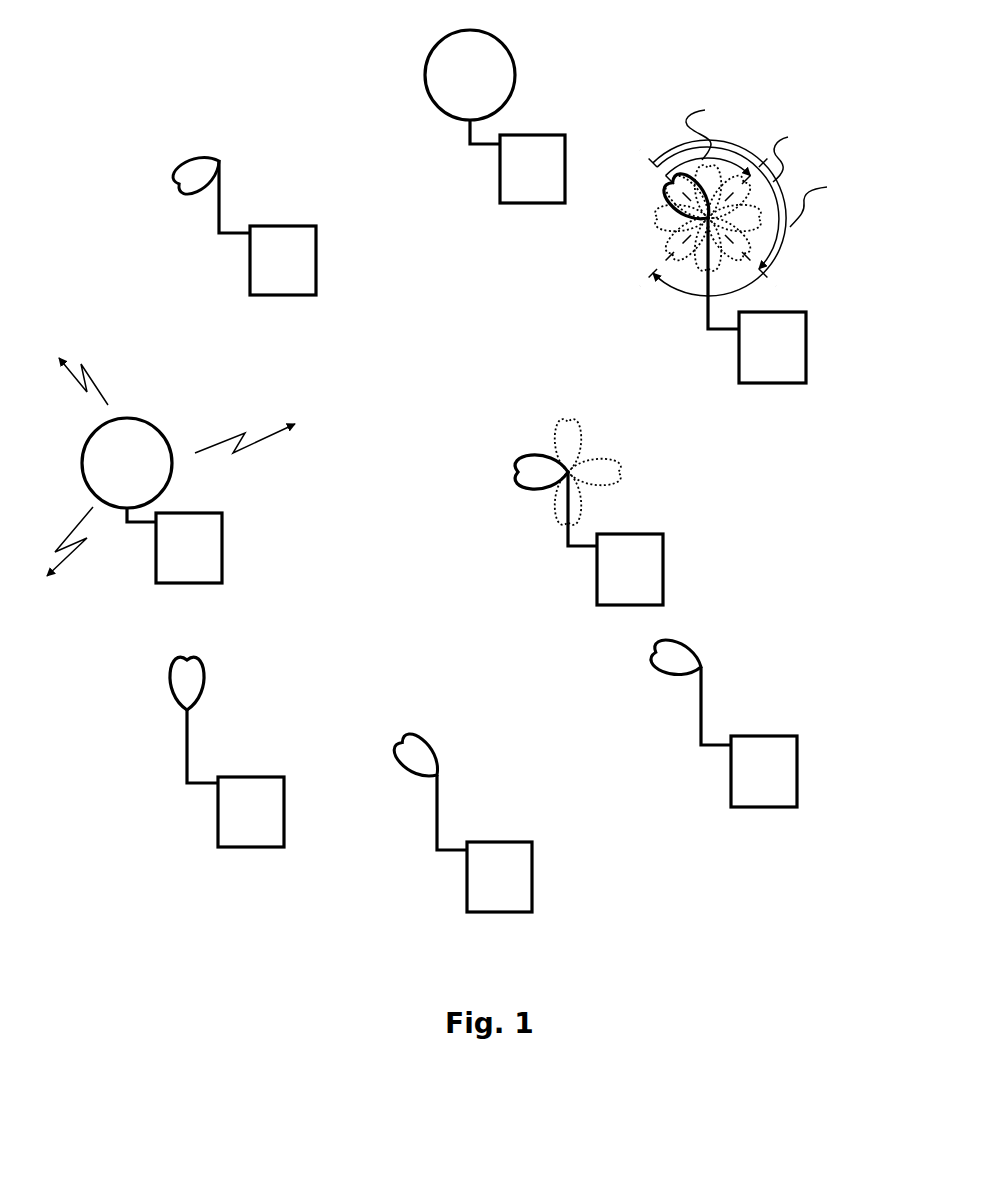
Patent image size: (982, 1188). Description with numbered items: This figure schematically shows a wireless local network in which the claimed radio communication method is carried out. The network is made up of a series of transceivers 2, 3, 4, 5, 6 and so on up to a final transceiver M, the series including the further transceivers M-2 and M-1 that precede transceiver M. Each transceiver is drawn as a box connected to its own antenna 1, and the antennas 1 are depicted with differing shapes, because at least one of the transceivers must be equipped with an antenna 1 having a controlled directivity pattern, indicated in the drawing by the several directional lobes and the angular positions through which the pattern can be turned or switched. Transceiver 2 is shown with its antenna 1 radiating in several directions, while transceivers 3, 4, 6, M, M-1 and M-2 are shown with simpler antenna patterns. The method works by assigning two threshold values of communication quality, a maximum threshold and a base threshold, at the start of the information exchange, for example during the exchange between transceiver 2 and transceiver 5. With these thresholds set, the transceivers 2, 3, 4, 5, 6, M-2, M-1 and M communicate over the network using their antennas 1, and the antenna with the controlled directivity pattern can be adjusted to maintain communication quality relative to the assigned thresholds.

The antenna 1 is at (203, 168).
The transceiver 2 is at (208, 533).
The transceiver 3 is at (301, 238).
The transceiver 4 is at (550, 150).
The transceiver 5 is at (792, 333).
The transceiver 6 is at (648, 552).
The transceiver M is at (272, 787).
The receiver module M-1 is at (527, 853).
The receiver module M-2 is at (787, 753).